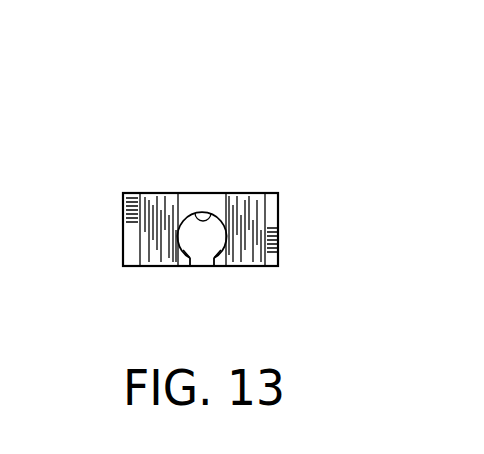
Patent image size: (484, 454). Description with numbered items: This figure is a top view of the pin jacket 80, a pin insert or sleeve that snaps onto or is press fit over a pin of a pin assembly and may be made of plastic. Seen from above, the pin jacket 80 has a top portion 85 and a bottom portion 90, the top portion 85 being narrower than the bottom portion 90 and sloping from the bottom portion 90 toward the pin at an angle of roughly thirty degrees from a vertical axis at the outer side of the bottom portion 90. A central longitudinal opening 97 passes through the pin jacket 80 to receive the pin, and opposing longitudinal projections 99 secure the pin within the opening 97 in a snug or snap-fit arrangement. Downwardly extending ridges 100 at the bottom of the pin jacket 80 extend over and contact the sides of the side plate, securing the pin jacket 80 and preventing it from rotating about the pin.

The pin jacket 80 is at (254, 193).
The top portion 85 is at (163, 193).
The bottom portion 90 is at (123, 204).
The opening 97 is at (205, 212).
The longitudinal projections 99 is at (187, 266).
The ridges 100 is at (135, 246).